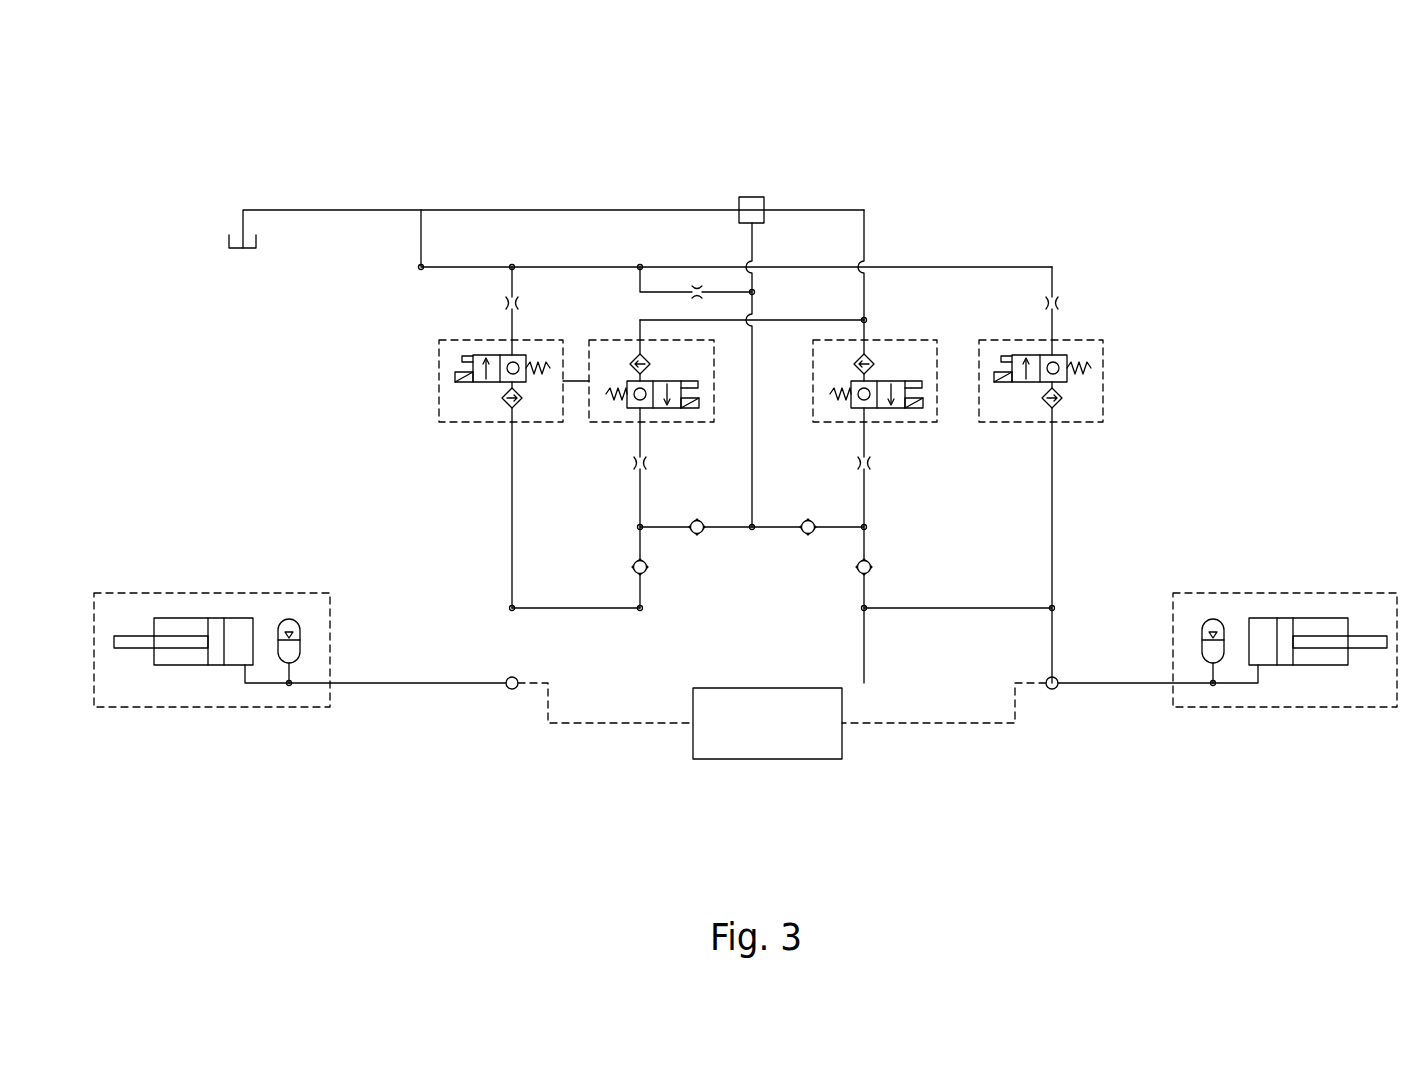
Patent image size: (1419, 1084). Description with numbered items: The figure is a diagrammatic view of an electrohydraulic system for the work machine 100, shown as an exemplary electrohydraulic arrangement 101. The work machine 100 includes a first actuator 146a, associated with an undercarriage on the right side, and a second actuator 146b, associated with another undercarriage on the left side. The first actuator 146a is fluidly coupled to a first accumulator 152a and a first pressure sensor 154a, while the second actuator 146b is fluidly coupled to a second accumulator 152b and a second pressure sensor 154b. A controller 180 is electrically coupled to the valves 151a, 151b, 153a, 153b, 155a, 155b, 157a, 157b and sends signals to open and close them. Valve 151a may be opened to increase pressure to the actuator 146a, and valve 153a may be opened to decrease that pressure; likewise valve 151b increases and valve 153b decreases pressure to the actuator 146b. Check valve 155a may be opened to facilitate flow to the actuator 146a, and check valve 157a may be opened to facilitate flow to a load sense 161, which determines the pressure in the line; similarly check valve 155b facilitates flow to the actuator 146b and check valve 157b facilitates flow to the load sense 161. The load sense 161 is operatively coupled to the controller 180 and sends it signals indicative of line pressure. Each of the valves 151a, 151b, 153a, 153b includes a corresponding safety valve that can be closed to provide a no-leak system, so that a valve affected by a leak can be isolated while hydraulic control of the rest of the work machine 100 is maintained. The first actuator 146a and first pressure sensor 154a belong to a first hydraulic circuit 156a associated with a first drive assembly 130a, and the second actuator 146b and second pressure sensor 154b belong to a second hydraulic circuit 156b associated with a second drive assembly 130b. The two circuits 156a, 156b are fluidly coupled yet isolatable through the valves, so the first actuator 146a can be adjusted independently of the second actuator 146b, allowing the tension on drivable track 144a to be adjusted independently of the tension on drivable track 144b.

The work machine 100 is at (400, 172).
The electrohydraulic arrangement 101 is at (1105, 232).
The load sense 161 is at (752, 196).
The valve 153a is at (439, 381).
The valve 153b is at (1103, 381).
The valve 151a is at (607, 422).
The valve 151b is at (900, 422).
The first hydraulic circuit 156a is at (450, 515).
The second hydraulic circuit 156b is at (1130, 492).
The check valve 155a is at (633, 573).
The check valve 155b is at (871, 573).
The check valve 157a is at (699, 535).
The check valve 157b is at (807, 535).
The first pressure sensor 154a is at (511, 690).
The second pressure sensor 154b is at (1053, 690).
The controller 180 is at (770, 760).
The drivable track 144a is at (173, 593).
The drivable track 144b is at (1328, 593).
The first actuator 146a is at (183, 665).
The second actuator 146b is at (1318, 665).
The first accumulator 152a is at (289, 619).
The second accumulator 152b is at (1213, 619).
The first drive assembly 130a is at (256, 735).
The second drive assembly 130b is at (1265, 745).